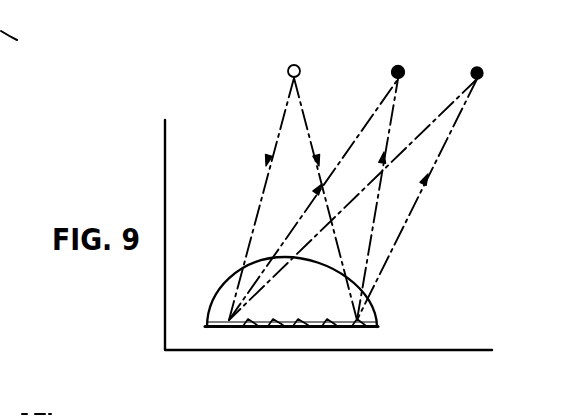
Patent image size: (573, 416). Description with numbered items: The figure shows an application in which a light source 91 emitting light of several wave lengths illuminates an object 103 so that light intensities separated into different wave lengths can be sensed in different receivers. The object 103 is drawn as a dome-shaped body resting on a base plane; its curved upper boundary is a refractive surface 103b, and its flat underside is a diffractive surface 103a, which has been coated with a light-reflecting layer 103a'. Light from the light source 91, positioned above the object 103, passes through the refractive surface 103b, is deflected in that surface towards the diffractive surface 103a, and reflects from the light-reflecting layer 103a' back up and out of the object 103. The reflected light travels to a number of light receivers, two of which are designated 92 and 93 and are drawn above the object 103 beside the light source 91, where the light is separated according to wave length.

The light source 91 is at (296, 64).
The light receiver 92 is at (400, 65).
The light receiver 93 is at (481, 67).
The object 103 is at (320, 305).
The diffractive surface 103a is at (351, 315).
The light-reflecting layer 103a' is at (288, 366).
The refractive surface 103b is at (327, 262).